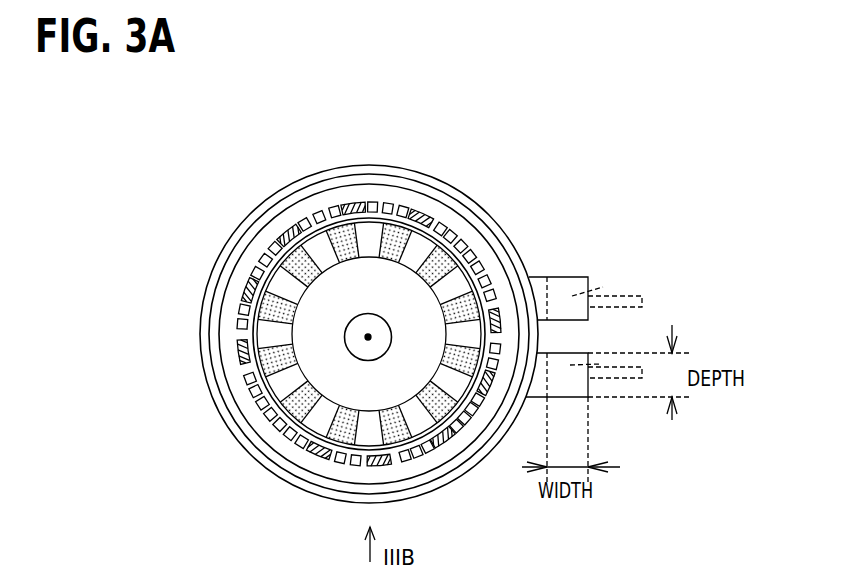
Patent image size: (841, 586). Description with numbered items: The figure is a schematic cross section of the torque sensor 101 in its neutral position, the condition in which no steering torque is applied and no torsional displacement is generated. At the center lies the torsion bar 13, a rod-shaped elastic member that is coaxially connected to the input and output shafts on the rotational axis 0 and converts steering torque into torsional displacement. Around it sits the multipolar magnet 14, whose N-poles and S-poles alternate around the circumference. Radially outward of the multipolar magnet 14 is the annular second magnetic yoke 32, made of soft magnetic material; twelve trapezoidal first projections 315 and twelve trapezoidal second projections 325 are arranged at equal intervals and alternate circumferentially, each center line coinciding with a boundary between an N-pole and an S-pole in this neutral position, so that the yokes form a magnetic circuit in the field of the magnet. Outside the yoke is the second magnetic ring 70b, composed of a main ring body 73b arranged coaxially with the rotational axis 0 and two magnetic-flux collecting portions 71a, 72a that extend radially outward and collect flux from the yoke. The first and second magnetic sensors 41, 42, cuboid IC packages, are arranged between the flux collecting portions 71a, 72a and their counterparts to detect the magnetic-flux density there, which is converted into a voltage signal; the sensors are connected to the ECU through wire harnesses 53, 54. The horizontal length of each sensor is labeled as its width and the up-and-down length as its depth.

The torque sensor 101 is at (358, 308).
The second magnetic ring 70b is at (452, 186).
The main ring body 73b is at (500, 232).
The second magnetic yoke 32 is at (289, 452).
The first projections 315 is at (252, 289).
The second projections 325 is at (250, 395).
The multipolar magnet 14 is at (366, 258).
The torsion bar 13 is at (356, 331).
The rotational axis 0 is at (364, 343).
The magnetic-flux collecting portion 71a is at (561, 302).
The magnetic-flux collecting portion 72a is at (570, 375).
The first magnetic sensor 41 is at (603, 287).
The second magnetic sensor 42 is at (601, 330).
The wire harness 53 is at (618, 297).
The wire harness 54 is at (603, 366).